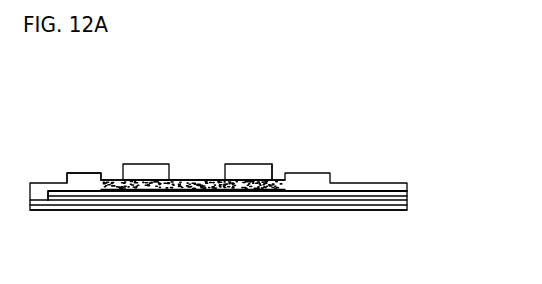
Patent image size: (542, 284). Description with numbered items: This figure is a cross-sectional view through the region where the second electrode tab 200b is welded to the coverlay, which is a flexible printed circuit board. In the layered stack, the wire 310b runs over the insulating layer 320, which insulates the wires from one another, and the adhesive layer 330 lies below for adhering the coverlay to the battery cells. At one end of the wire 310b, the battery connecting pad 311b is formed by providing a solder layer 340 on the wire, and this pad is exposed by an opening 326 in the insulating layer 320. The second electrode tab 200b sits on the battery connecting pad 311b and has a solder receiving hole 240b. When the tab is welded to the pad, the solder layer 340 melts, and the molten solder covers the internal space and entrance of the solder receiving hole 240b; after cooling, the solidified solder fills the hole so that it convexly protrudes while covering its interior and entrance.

The second electrode tab 200b is at (241, 174).
The solder receiving hole 240b is at (193, 158).
The battery connecting pad 311b is at (108, 166).
The opening 326 is at (283, 151).
The wire 310b is at (353, 192).
The insulating layer 320 is at (405, 199).
The adhesive layer 330 is at (258, 210).
The solder layer 340 is at (148, 184).